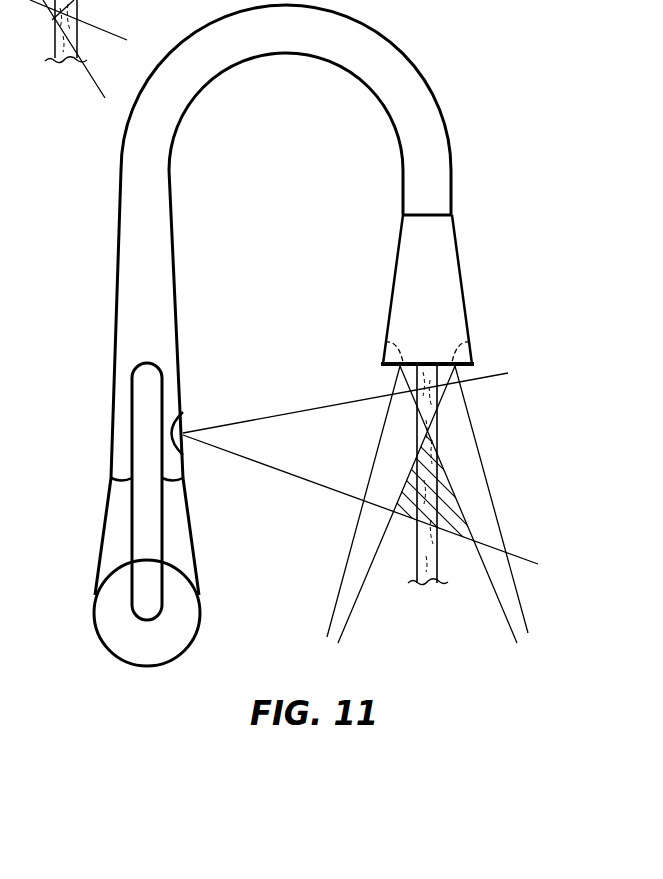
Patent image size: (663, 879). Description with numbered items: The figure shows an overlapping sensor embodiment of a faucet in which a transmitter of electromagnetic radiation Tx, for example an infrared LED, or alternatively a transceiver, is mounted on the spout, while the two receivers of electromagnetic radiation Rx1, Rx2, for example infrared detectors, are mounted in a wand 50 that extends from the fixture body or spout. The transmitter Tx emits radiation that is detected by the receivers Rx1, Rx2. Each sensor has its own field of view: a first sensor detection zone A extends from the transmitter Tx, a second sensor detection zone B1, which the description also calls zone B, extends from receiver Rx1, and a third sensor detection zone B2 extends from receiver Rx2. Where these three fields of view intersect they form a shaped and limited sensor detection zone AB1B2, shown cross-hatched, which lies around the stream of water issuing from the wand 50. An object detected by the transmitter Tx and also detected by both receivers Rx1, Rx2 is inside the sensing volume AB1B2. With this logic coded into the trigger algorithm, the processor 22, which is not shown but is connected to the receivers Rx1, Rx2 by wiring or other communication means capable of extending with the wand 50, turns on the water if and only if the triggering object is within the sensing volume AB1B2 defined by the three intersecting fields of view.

The processor 22 is at (122, 450).
The wand 50 is at (447, 278).
The transmitter of electromagnetic radiation Tx is at (172, 433).
The receiver of electromagnetic radiation Rx1 is at (385, 342).
The receiver of electromagnetic radiation Rx2 is at (470, 342).
The first sensor detection zone A is at (290, 410).
The second sensor detection zone B1 is at (345, 572).
The third sensor detection zone B2 is at (520, 600).
The sensor detection zone B is at (100, 75).
The shaped and limited sensor detection zone AB1B2 is at (452, 505).